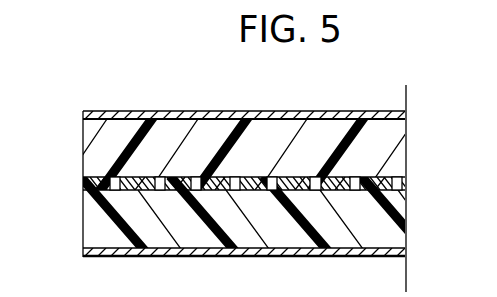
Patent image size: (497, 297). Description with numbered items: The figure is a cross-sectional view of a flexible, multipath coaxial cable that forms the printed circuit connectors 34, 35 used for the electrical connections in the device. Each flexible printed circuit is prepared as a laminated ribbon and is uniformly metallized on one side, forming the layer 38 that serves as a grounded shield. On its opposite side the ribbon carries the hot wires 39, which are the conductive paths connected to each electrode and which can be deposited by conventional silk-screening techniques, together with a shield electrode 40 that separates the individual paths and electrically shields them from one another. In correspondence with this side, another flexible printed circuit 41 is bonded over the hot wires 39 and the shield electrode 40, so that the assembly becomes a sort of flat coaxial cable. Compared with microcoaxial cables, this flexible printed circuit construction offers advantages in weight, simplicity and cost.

The printed circuit connector 34 is at (370, 218).
The printed circuit connector 35 is at (244, 276).
The layer 38 is at (175, 111).
The hot wires 39 is at (257, 177).
The shield electrode 40 is at (84, 182).
The flexible printed circuit 41 is at (213, 137).